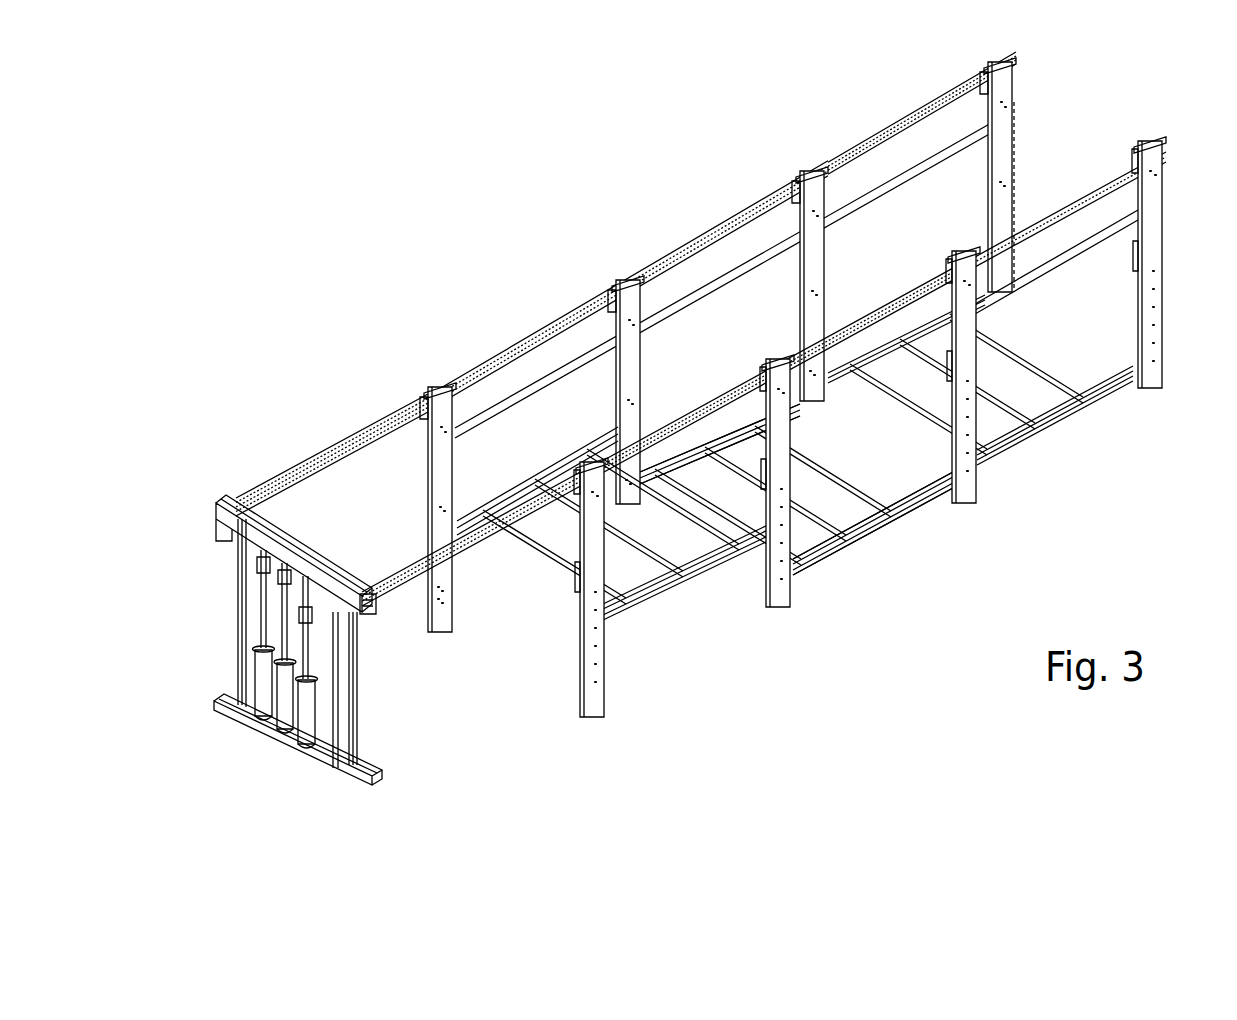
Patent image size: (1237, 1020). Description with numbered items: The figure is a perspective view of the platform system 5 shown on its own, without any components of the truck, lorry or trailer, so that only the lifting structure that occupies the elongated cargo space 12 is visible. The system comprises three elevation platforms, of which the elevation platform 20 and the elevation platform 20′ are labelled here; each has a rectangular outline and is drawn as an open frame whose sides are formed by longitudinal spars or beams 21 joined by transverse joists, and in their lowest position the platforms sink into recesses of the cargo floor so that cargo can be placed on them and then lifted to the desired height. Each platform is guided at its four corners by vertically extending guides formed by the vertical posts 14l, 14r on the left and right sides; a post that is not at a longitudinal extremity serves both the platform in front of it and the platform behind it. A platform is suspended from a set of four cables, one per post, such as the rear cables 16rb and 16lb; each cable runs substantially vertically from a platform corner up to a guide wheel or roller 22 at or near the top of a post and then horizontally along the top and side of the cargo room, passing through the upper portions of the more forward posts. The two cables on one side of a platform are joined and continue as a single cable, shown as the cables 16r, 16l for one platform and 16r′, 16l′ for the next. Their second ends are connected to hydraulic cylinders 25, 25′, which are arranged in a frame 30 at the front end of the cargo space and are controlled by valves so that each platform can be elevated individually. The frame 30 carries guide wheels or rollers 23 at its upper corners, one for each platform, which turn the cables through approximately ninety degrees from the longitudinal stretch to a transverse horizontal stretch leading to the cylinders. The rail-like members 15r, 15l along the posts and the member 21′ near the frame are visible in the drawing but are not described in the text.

The platform system 5 is at (455, 223).
The cargo space 12 is at (968, 215).
The vertical post 14r is at (1014, 112).
The vertical post 14l is at (1166, 232).
The right intermediate rail 15r is at (540, 386).
The left intermediate rail 15l is at (1080, 258).
The cable 16r is at (702, 232).
The cable 16r′ is at (310, 458).
The cable 16rb is at (903, 113).
The cable 16l is at (906, 286).
The cable 16l′ is at (483, 548).
The cable 16lb is at (1074, 190).
The elevation platform 20 is at (1105, 382).
The elevation platform 20′ is at (933, 490).
The longitudinal spars or beams 21 is at (713, 437).
The longitudinal floor rail 21′ is at (219, 223).
The guide wheel or roller 22 is at (550, 562).
The guide wheels or rollers 23 is at (362, 613).
The hydraulic cylinder 25 is at (307, 733).
The hydraulic cylinder 25′ is at (284, 720).
The frame 30 is at (312, 544).